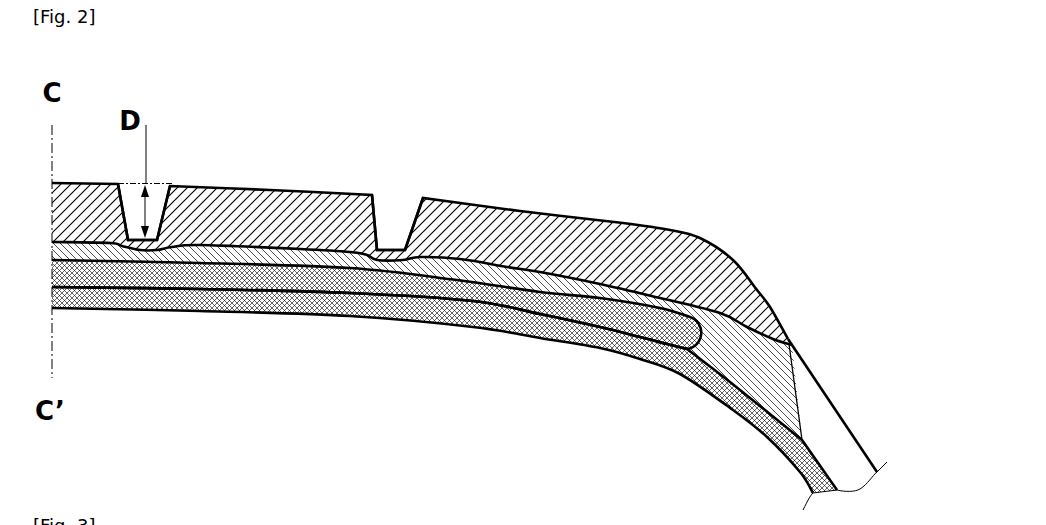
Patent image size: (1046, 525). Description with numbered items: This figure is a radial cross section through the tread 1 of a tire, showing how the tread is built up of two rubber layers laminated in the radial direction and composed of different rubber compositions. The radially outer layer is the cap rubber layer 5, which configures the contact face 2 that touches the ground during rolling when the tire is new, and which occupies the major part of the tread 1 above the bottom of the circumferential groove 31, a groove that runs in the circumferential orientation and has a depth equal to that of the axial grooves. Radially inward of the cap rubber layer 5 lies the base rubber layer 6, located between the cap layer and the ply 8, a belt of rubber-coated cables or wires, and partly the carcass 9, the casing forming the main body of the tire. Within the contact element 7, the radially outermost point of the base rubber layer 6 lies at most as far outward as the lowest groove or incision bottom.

The tread 1 is at (665, 150).
The contact face 2 is at (270, 188).
The cap rubber layer 5 is at (508, 232).
The base rubber layer 6 is at (580, 285).
The contact element 7 is at (60, 183).
The ply 8 is at (187, 273).
The carcass 9 is at (343, 300).
The circumferential groove 31 is at (168, 185).